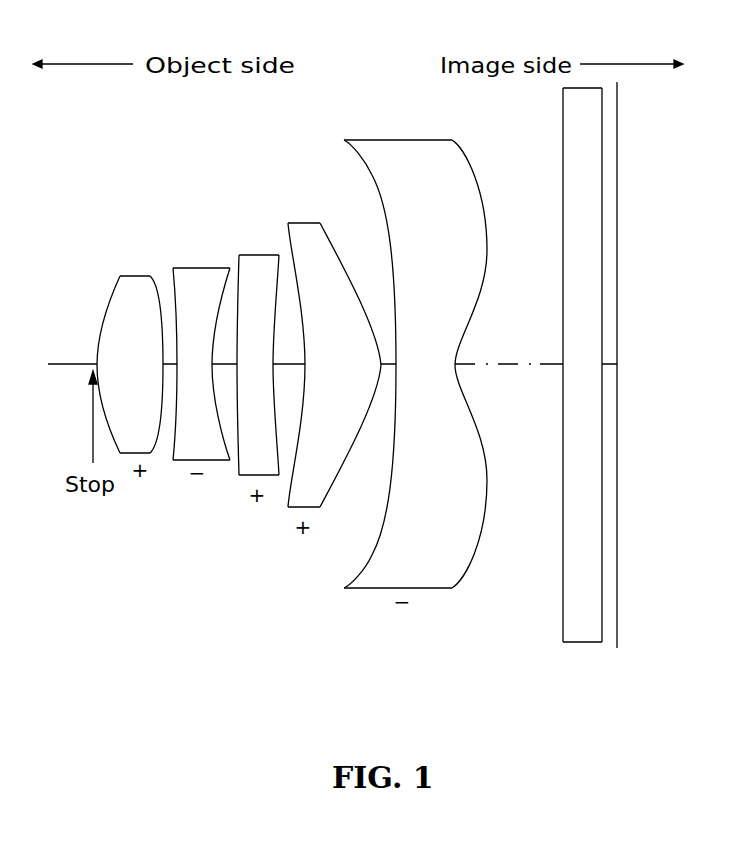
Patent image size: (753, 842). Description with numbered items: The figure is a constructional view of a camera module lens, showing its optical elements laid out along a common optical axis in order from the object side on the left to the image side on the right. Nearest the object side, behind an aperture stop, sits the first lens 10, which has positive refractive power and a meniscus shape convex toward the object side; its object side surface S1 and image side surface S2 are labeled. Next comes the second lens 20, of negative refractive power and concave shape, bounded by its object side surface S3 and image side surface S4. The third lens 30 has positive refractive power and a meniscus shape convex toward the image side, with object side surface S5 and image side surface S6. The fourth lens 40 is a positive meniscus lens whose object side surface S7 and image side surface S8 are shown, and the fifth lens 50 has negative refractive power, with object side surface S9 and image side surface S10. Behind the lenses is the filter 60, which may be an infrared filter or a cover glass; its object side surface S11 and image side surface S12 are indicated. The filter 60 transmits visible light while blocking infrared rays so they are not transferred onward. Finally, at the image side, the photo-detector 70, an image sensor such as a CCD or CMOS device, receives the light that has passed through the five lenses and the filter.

The first lens 10 is at (109, 368).
The second lens 20 is at (188, 361).
The third lens 30 is at (233, 410).
The fourth lens 40 is at (306, 410).
The fifth lens 50 is at (375, 353).
The filter 60 is at (588, 365).
The photo-detector 70 is at (617, 485).
The object side surface of the first lens S1 is at (113, 288).
The image side surface of the first lens S2 is at (150, 286).
The object side surface of the second lens S3 is at (172, 290).
The image side surface of the second lens S4 is at (222, 280).
The object side surface of the third lens S5 is at (228, 455).
The image side surface of the third lens S6 is at (253, 458).
The object side surface of the fourth lens S7 is at (302, 490).
The image side surface of the fourth lens S8 is at (338, 482).
The object side surface of the fifth lens S9 is at (365, 160).
The image side surface of the fifth lens S10 is at (466, 158).
The object side surface of the filter S11 is at (563, 152).
The image side surface of the filter S12 is at (603, 104).